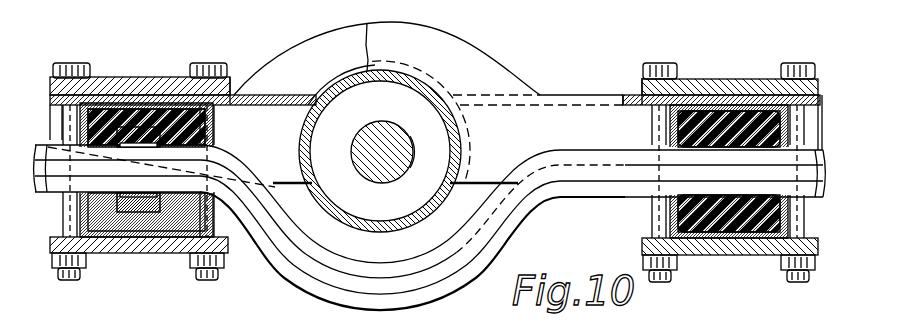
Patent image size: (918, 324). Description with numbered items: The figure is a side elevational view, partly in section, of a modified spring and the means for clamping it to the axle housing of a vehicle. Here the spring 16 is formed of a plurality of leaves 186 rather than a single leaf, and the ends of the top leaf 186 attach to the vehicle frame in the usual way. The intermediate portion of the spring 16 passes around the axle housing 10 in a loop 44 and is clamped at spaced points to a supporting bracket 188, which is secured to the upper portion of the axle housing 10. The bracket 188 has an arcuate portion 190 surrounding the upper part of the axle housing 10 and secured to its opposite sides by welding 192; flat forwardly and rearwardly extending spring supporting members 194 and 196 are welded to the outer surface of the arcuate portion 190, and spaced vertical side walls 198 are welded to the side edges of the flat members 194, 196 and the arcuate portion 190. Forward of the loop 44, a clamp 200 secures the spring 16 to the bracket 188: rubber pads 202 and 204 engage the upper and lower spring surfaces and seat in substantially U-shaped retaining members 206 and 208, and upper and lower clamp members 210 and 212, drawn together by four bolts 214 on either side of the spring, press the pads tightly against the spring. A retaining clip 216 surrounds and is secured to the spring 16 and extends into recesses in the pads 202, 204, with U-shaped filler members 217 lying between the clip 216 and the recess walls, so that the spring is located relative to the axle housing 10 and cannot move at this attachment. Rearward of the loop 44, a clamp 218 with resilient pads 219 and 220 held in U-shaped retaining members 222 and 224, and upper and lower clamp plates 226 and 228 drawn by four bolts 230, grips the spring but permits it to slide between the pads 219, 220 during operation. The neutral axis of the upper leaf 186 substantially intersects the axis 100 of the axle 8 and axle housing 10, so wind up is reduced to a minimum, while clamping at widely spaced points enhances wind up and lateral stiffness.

The axle 8 is at (416, 148).
The axle housing 10 is at (382, 231).
The spring 16 is at (46, 194).
The loop 44 is at (368, 308).
The axis 100 is at (393, 128).
The leaves 186 is at (641, 167).
The supporting bracket 188 is at (467, 56).
The arcuate portion 190 is at (350, 78).
The welding 192 is at (304, 186).
The spring supporting member 194 is at (229, 95).
The spring supporting member 196 is at (633, 97).
The side walls 198 is at (278, 127).
The clamp 200 is at (50, 76).
The rubber pad 202 is at (106, 110).
The rubber pad 204 is at (98, 243).
The retaining member 206 is at (150, 105).
The retaining member 208 is at (162, 250).
The upper clamp member 210 is at (126, 78).
The lower clamp member 212 is at (228, 246).
The bolts 214 is at (68, 281).
The retaining clip 216 is at (190, 108).
The filler members 217 is at (178, 145).
The clamp 218 is at (638, 77).
The resilient pad 219 is at (752, 118).
The resilient pad 220 is at (764, 224).
The retaining member 222 is at (697, 108).
The retaining member 224 is at (712, 241).
The upper clamp plate 226 is at (818, 80).
The lower clamp plate 228 is at (730, 256).
The bolts 230 is at (660, 283).